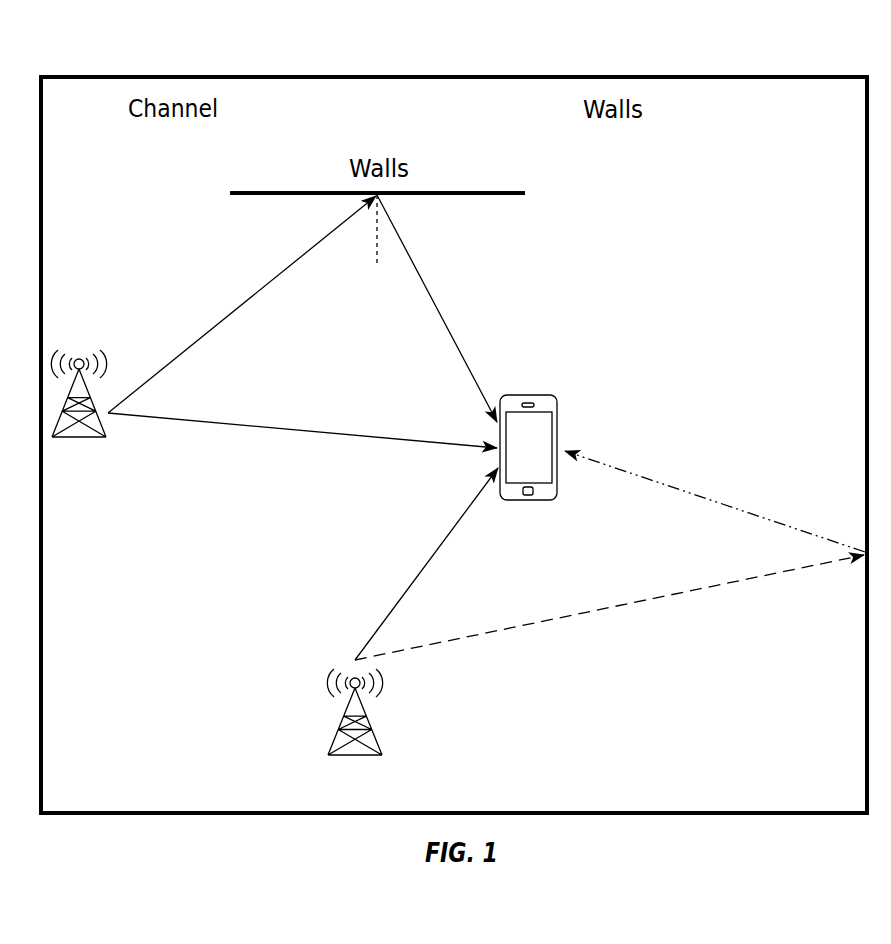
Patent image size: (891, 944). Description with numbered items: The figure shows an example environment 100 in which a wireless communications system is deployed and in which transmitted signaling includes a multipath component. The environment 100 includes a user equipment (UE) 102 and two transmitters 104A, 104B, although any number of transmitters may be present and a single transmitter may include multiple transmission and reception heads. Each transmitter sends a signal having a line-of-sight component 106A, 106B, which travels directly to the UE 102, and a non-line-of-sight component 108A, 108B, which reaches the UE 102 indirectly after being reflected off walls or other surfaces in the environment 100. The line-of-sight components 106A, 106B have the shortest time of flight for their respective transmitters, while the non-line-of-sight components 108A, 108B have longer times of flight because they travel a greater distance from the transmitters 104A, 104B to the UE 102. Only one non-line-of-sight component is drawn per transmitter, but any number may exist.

The environment 100 is at (112, 58).
The user equipment (UE) 102 is at (639, 424).
The transmitter 104A is at (141, 336).
The transmitter 104B is at (443, 716).
The line-of-sight component 106A is at (302, 428).
The line-of-sight component 106B is at (405, 592).
The non-line-of-sight component 108A is at (438, 308).
The non-line-of-sight component 108B is at (702, 495).